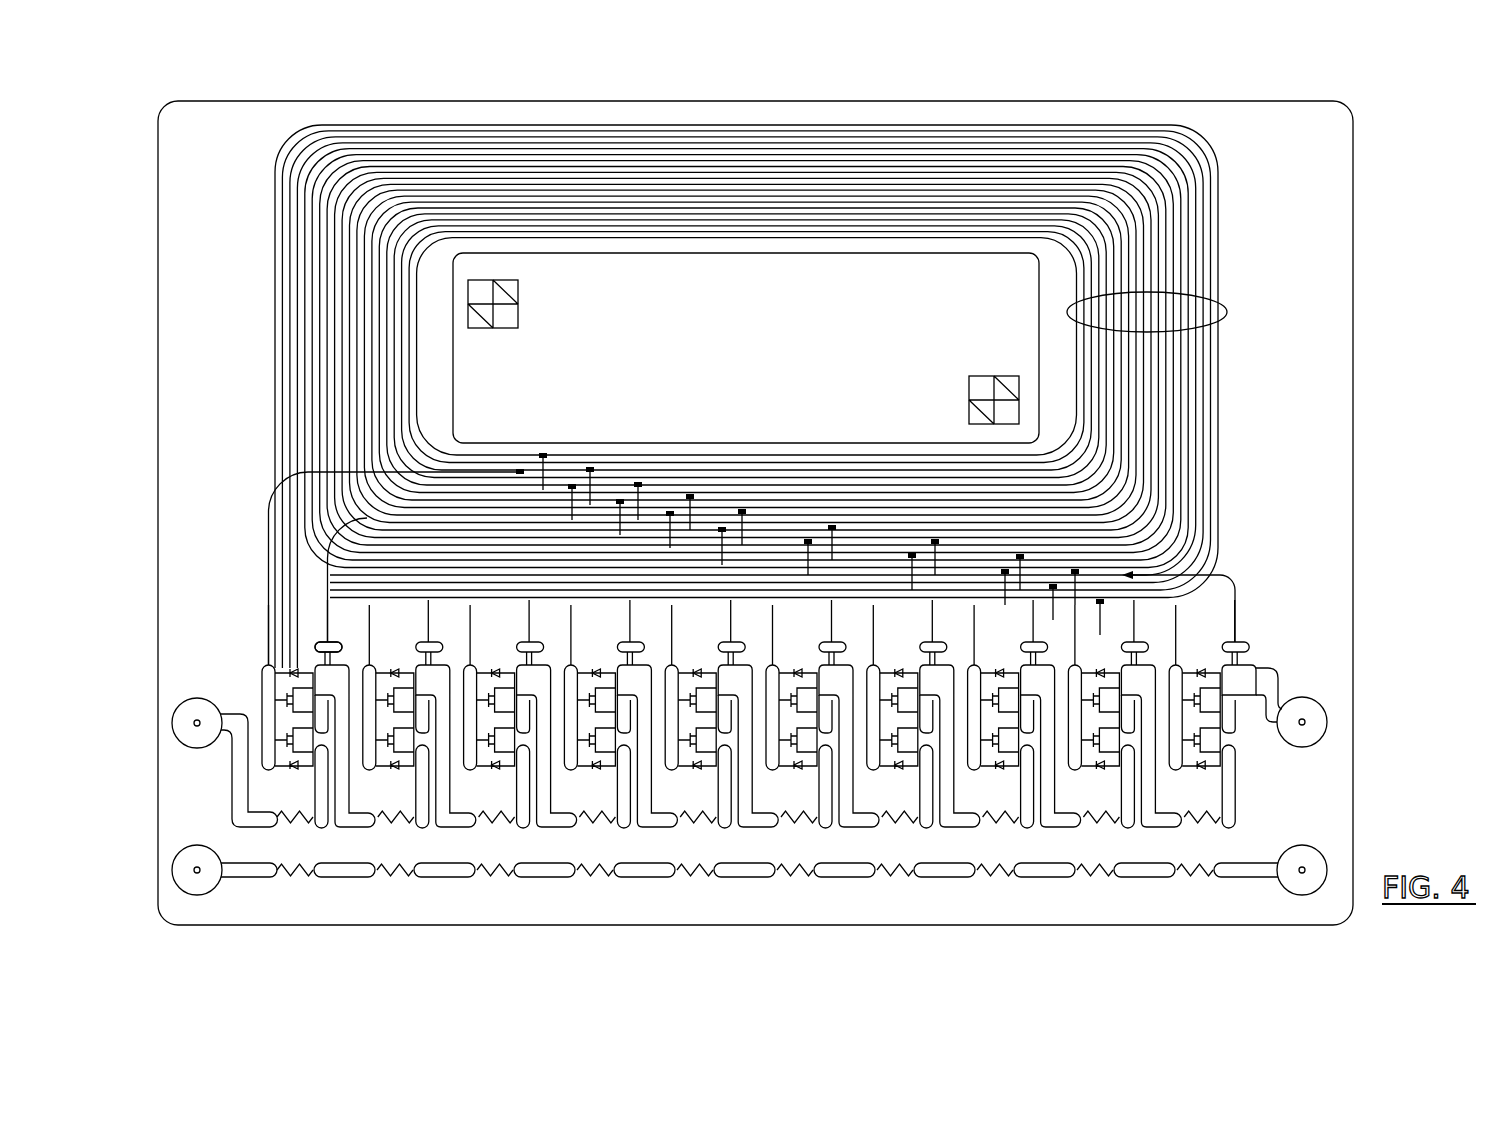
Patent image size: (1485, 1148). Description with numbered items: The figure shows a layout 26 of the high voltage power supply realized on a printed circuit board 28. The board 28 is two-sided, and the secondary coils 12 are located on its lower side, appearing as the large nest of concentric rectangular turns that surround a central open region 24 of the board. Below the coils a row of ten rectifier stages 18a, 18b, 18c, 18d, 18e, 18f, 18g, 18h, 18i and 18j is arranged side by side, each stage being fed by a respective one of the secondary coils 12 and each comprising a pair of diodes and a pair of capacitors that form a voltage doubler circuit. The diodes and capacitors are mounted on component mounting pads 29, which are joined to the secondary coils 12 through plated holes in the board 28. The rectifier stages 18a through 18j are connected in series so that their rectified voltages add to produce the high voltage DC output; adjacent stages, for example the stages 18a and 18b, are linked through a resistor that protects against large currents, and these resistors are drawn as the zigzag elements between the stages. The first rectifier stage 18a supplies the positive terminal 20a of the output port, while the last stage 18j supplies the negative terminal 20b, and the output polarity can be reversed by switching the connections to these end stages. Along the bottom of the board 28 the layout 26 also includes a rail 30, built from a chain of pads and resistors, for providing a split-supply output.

The layout 26 is at (1372, 183).
The printed circuit board 28 is at (1330, 366).
The secondary coils 12 is at (1226, 318).
The central window region 24 is at (901, 337).
The first rectifier stage 18a is at (1208, 656).
The rectifier stage 18b is at (1110, 660).
The rectifier stage 18c is at (991, 660).
The rectifier stage 18d is at (892, 660).
The rectifier stage 18e is at (786, 660).
The rectifier stage 18f is at (700, 660).
The rectifier stage 18g is at (600, 660).
The rectifier stage 18h is at (497, 660).
The rectifier stage 18i is at (396, 660).
The rectifier stage 18j is at (298, 660).
The positive terminal 20a is at (1302, 747).
The negative terminal 20b is at (196, 698).
The component mounting pads 29 is at (266, 668).
The rail 30 is at (1252, 861).